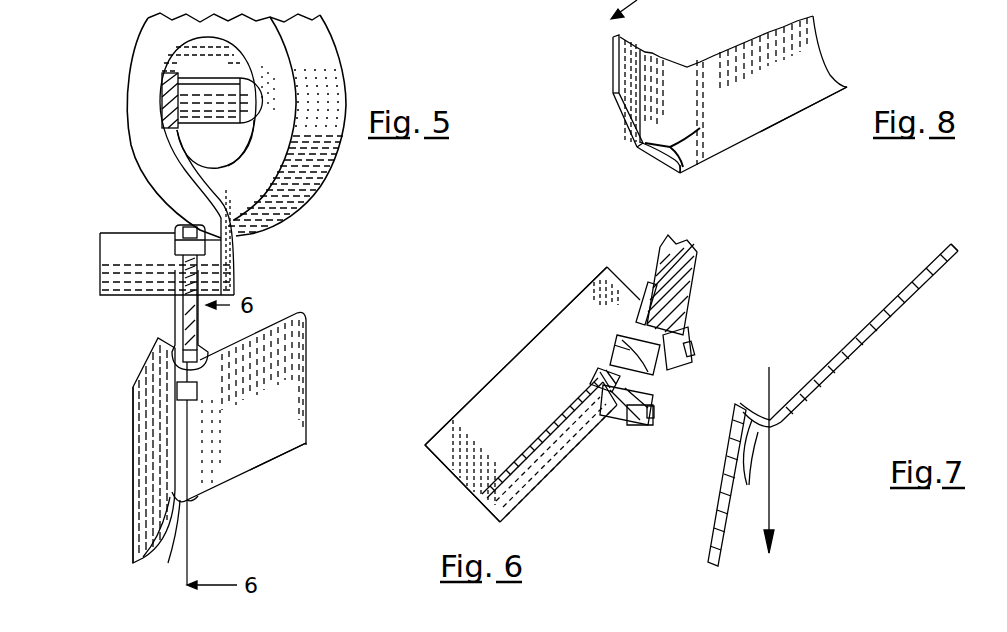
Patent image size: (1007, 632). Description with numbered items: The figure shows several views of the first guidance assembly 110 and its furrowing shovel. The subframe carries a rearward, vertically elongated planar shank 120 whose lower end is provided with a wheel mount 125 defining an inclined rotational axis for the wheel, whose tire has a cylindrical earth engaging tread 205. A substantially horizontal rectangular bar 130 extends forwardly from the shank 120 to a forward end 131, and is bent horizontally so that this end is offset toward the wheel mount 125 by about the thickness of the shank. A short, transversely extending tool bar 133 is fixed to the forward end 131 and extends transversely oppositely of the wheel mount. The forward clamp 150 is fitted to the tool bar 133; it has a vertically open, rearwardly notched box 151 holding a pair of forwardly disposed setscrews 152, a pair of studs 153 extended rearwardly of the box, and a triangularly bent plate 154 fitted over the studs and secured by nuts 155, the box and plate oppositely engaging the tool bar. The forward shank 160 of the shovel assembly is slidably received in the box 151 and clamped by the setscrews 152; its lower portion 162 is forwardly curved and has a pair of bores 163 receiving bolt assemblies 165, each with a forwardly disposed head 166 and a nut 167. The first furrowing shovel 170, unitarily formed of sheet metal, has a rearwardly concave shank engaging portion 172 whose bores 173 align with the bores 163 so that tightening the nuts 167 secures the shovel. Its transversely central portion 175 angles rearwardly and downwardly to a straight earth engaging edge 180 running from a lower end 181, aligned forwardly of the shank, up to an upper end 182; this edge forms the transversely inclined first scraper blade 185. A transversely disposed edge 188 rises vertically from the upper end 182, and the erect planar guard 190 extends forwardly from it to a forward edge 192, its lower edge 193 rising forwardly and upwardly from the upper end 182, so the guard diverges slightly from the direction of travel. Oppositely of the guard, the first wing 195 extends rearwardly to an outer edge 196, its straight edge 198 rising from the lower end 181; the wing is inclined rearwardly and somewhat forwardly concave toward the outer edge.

In FIG. 5, the first guidance assembly 110 is at (98, 171).
In FIG. 5, the shank 120 is at (162, 100).
In FIG. 5, the wheel mount 125 is at (204, 90).
In FIG. 5, the bar 130 is at (173, 163).
In FIG. 5, the forward end 131 is at (234, 258).
In FIG. 5, the tool bar 133 is at (100, 253).
In FIG. 5, the forward clamp 150 is at (120, 307).
In FIG. 5, the box 151 is at (175, 313).
In FIG. 5, the setscrews 152 is at (200, 393).
In FIG. 5, the studs 153 is at (205, 267).
In FIG. 5, the triangularly bent plate 154 is at (175, 228).
In FIG. 5, the nuts 155 is at (205, 242).
In FIG. 5, the shank 160 is at (192, 336).
In FIG. 6, the lower portion 162 is at (697, 263).
In FIG. 6, the bores 163 is at (650, 342).
In FIG. 6, the bolt assemblies 165 is at (693, 349).
In FIG. 6, the head 166 is at (627, 335).
In FIG. 6, the nut 167 is at (687, 327).
In FIG. 5, the first furrowing shovel 170 is at (309, 393).
In FIG. 8, the first furrowing shovel 170 is at (507, 2).
In FIG. 6, the shank engaging portion 172 is at (550, 438).
In FIG. 7, the shank engaging portion 172 is at (777, 412).
In FIG. 6, the bores 173 is at (637, 328).
In FIG. 5, the central portion 175 is at (190, 470).
In FIG. 8, the central portion 175 is at (687, 101).
In FIG. 7, the central portion 175 is at (754, 464).
In FIG. 5, the earth engaging edge 180 is at (180, 500).
In FIG. 8, the earth engaging edge 180 is at (655, 163).
In FIG. 8, the lower end 181 is at (678, 174).
In FIG. 8, the upper end 182 is at (637, 150).
In FIG. 8, the first scraper blade 185 is at (700, 128).
In FIG. 5, the edge 188 is at (157, 535).
In FIG. 6, the edge 188 is at (530, 488).
In FIG. 7, the edge 188 is at (740, 403).
In FIG. 8, the first guard 190 is at (613, 72).
In FIG. 6, the first guard 190 is at (543, 417).
In FIG. 7, the first guard 190 is at (713, 520).
In FIG. 5, the forward edge 192 is at (135, 412).
In FIG. 6, the forward edge 192 is at (573, 297).
In FIG. 5, the lower edge 193 is at (153, 533).
In FIG. 8, the lower edge 193 is at (620, 112).
In FIG. 6, the lower edge 193 is at (453, 475).
In FIG. 5, the first wing 195 is at (283, 391).
In FIG. 8, the first wing 195 is at (788, 101).
In FIG. 7, the first wing 195 is at (887, 322).
In FIG. 5, the outer edge 196 is at (310, 425).
In FIG. 7, the outer edge 196 is at (957, 248).
In FIG. 5, the edge 198 is at (280, 462).
In FIG. 8, the edge 198 is at (765, 134).
In FIG. 5, the tread 205 is at (333, 71).